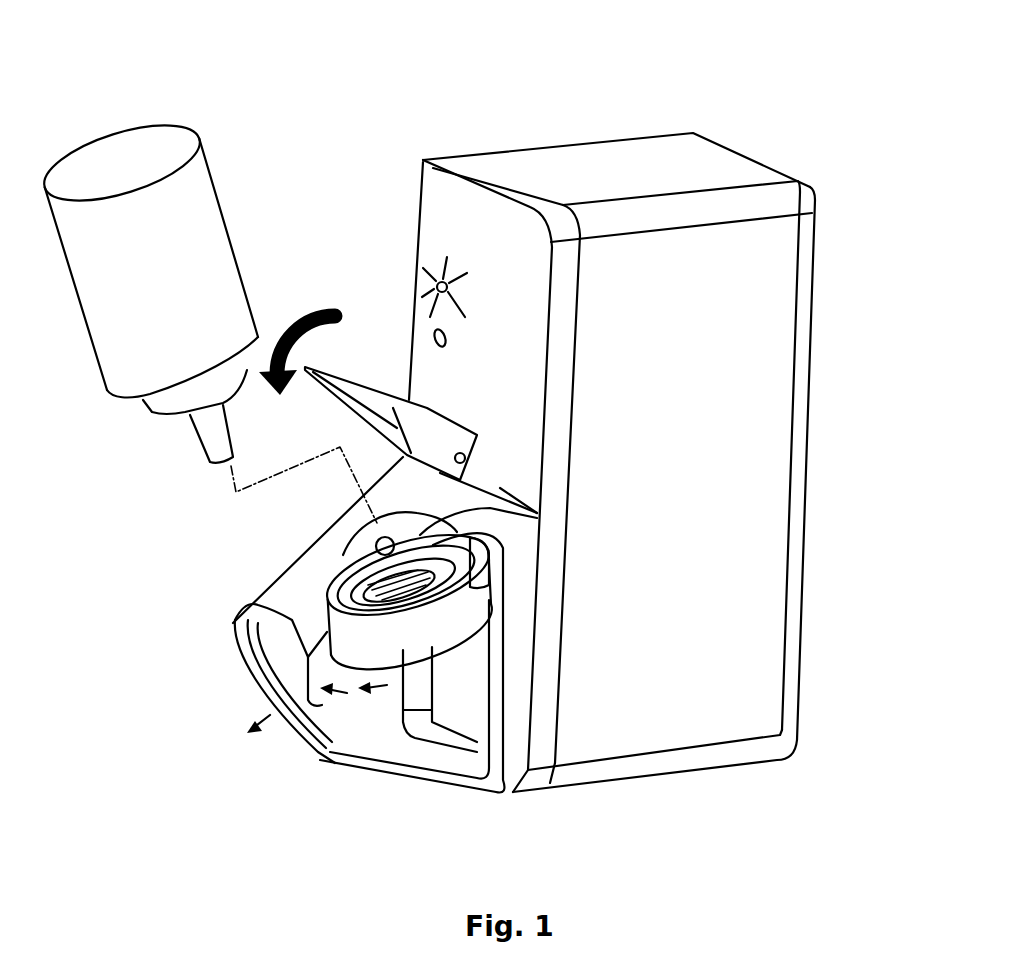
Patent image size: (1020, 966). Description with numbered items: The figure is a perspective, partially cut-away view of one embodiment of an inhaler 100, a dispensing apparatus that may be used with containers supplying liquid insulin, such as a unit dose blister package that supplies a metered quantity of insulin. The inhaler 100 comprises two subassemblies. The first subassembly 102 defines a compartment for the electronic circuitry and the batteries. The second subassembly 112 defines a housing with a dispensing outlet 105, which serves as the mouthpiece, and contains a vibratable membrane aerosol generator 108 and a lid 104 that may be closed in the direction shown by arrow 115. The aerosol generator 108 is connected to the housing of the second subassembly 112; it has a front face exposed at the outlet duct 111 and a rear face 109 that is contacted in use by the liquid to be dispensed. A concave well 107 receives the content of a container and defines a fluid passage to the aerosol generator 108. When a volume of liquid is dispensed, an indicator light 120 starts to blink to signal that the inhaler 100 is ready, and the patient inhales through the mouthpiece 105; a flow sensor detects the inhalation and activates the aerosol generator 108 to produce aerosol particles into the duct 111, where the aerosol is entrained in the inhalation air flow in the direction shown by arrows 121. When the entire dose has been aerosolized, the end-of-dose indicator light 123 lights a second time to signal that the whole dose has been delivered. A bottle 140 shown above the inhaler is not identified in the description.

The inhaler 100 is at (543, 58).
The first subassembly 102 is at (813, 195).
The lid 104 is at (368, 362).
The dispensing outlet 105 is at (236, 628).
The well 107 is at (343, 553).
The vibratable membrane aerosol generator 108 is at (325, 747).
The rear face 109 is at (540, 516).
The outlet duct 111 is at (380, 707).
The second subassembly 112 is at (515, 790).
The arrow 115 is at (293, 330).
The indicator light 120 is at (418, 210).
The arrows 121 is at (337, 700).
The end-of-dose indicator light 123 is at (437, 333).
The refill bottle 140 is at (203, 167).